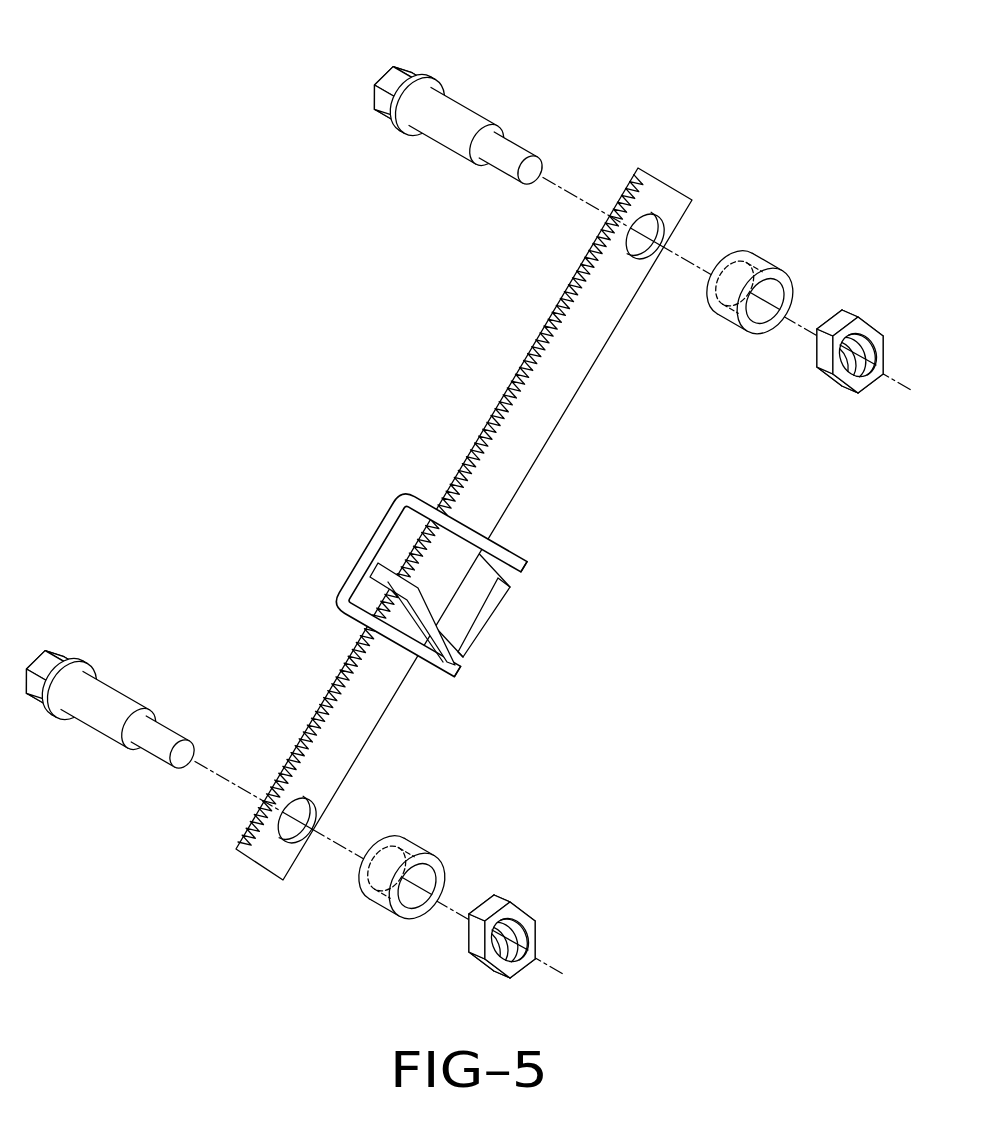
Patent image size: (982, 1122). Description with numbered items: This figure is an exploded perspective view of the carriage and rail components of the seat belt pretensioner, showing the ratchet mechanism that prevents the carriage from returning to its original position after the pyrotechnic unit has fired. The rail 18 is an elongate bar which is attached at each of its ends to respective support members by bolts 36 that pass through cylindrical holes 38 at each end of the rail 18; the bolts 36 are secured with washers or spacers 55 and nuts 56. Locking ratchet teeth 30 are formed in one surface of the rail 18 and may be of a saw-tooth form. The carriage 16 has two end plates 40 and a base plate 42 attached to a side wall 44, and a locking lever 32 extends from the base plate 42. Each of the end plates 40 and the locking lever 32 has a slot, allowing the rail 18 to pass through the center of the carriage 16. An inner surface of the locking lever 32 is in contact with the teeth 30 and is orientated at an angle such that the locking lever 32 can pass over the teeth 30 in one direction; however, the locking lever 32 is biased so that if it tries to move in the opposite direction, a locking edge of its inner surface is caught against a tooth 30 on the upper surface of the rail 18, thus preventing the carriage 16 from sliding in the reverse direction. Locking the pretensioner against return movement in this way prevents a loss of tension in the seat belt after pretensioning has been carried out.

The carriage 16 is at (425, 587).
The rail 18 is at (557, 398).
The locking ratchet teeth 30 is at (553, 312).
The locking lever 32 is at (413, 657).
The bolts 36 is at (492, 136).
The cylindrical holes 38 is at (661, 232).
The end plates 40 is at (520, 553).
The base plate 42 is at (482, 598).
The side wall 44 is at (397, 510).
The washers or spacers 55 is at (724, 320).
The nuts 56 is at (855, 398).